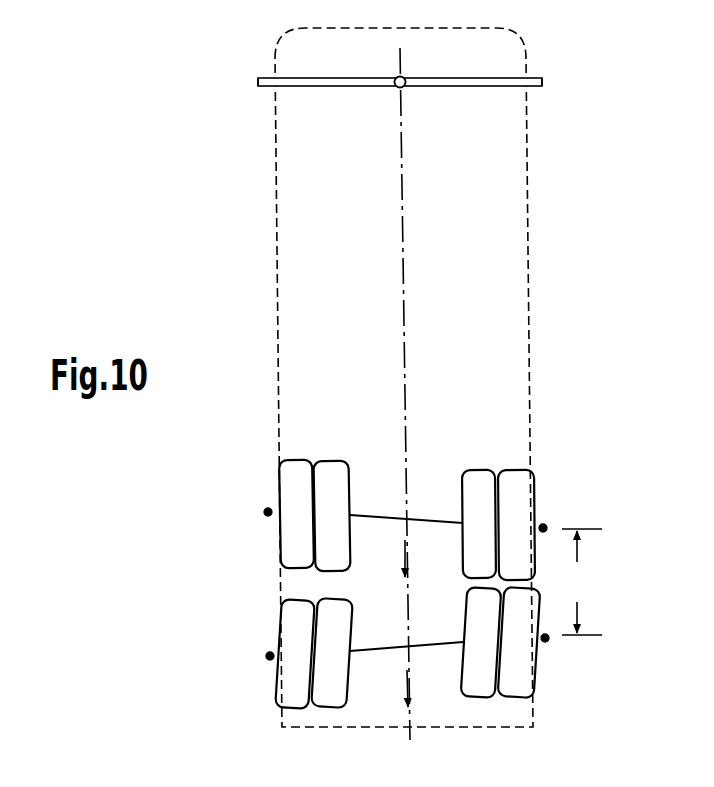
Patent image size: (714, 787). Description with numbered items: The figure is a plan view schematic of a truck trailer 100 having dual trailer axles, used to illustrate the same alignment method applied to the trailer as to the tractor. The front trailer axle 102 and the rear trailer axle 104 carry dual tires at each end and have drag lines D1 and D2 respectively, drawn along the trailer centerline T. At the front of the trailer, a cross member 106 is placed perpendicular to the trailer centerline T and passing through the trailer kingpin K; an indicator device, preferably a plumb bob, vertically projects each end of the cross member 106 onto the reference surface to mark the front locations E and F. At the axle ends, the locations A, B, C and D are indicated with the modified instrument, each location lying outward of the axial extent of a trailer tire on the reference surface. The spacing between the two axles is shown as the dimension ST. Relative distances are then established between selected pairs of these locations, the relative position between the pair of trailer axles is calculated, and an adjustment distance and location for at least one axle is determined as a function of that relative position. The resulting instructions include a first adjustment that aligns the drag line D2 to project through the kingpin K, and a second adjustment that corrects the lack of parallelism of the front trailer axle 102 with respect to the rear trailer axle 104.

The trailer 100 is at (262, 228).
The front trailer axle 102 is at (413, 521).
The rear trailer axle 104 is at (419, 643).
The cross member 106 is at (477, 80).
The trailer kingpin K is at (395, 75).
The front location E is at (255, 77).
The front location F is at (547, 77).
The trailer centerline T is at (403, 266).
The location A is at (266, 653).
The location B is at (548, 643).
The location C is at (546, 524).
The location D is at (266, 508).
The drag line D1 is at (388, 564).
The drag line D2 is at (427, 694).
The axle spacing ST is at (582, 582).